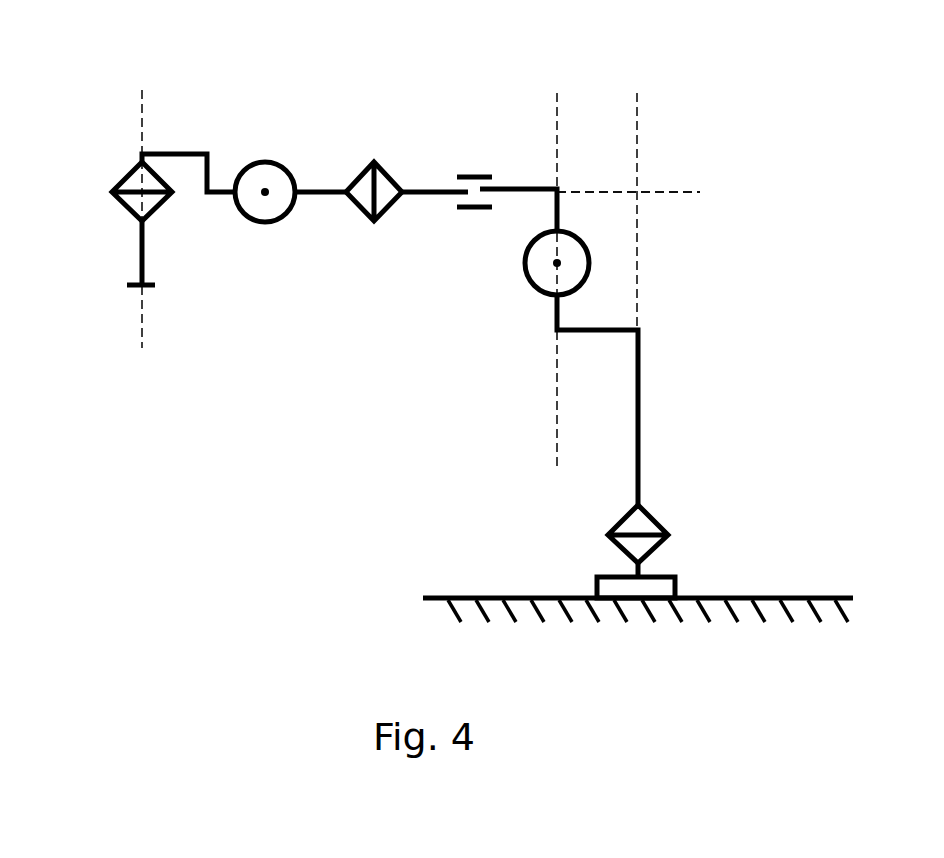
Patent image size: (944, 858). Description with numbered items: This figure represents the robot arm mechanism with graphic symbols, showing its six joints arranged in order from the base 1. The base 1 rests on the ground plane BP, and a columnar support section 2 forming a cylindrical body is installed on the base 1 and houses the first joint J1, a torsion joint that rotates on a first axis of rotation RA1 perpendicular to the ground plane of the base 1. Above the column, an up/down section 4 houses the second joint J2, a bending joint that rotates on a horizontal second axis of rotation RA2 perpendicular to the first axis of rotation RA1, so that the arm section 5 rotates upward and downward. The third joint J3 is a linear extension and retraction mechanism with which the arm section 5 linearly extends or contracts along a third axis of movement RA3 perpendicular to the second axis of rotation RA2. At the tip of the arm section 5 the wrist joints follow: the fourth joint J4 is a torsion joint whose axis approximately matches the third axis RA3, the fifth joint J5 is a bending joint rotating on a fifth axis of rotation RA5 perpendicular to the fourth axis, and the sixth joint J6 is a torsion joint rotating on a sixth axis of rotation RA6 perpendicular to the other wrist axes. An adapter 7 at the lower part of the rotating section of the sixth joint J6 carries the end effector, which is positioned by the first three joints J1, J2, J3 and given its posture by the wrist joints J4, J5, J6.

The base 1 is at (595, 590).
The columnar support section 2 is at (652, 436).
The up/down section 4 is at (582, 253).
The arm section 5 is at (430, 172).
The adapter 7 is at (157, 286).
The installation surface (base plate) BP is at (638, 593).
The first joint J1 is at (653, 534).
The second joint J2 is at (567, 274).
The third joint J3 is at (474, 165).
The fourth joint J4 is at (374, 172).
The fifth joint J5 is at (290, 172).
The sixth joint J6 is at (152, 187).
The first axis of rotation RA1 is at (642, 192).
The second axis of rotation RA2 is at (565, 263).
The third axis of movement RA3 is at (685, 281).
The fifth axis of rotation RA5 is at (268, 186).
The sixth axis of rotation RA6 is at (147, 201).